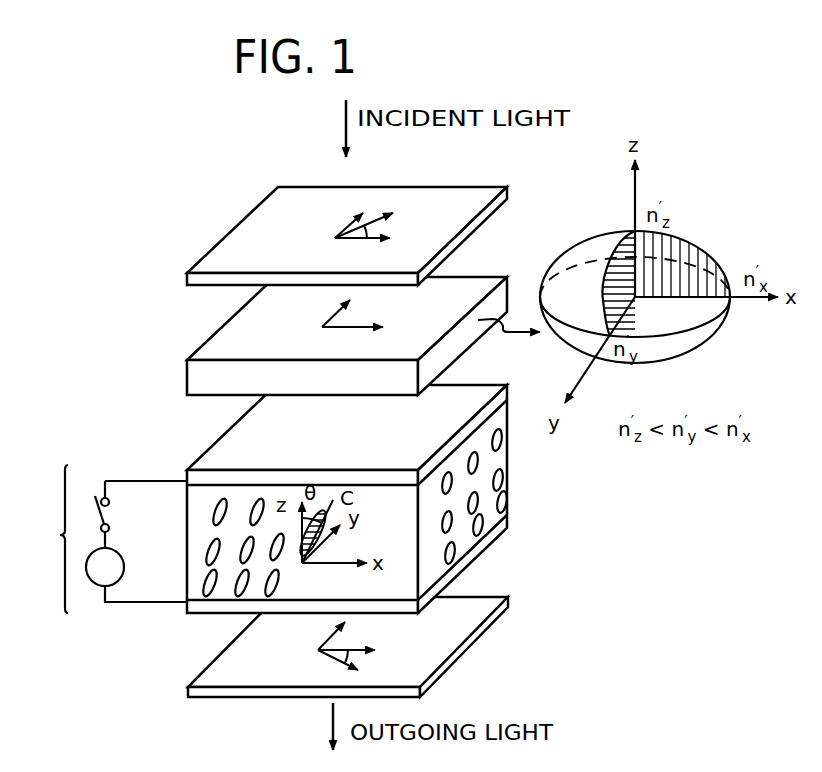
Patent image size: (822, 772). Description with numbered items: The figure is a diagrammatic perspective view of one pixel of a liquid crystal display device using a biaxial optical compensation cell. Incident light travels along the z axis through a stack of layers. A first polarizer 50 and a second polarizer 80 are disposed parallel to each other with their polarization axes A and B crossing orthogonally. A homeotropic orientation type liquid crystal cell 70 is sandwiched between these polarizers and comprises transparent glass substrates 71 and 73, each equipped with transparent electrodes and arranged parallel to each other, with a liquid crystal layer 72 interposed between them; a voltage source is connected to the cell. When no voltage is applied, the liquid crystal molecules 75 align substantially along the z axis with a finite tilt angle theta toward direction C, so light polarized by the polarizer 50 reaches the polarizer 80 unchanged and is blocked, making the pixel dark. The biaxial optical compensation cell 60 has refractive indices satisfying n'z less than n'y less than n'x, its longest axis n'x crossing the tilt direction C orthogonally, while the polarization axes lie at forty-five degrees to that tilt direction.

The polarizer 50 is at (241, 219).
The biaxial optical compensation cell 60 is at (216, 338).
The liquid crystal cell 70 is at (101, 539).
The transparent glass substrate 71 is at (222, 441).
The liquid crystal layer 72 is at (197, 523).
The transparent glass substrate 73 is at (207, 605).
The liquid crystal molecules 75 is at (262, 494).
The polarizer 80 is at (188, 688).